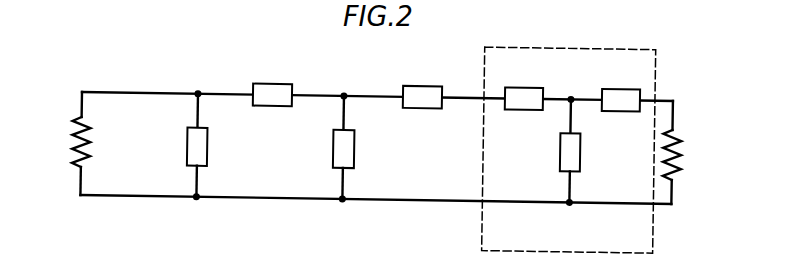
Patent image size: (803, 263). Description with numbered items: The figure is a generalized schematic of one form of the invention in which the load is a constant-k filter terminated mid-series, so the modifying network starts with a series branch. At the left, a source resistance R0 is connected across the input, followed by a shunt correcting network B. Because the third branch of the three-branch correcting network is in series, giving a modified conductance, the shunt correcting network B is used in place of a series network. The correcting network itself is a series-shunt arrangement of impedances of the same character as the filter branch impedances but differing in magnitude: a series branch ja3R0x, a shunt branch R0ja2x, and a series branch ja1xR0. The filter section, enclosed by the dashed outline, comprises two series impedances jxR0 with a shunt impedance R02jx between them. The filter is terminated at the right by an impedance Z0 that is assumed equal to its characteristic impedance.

The resistance R0 is at (56, 143).
The shunt correcting network B is at (179, 145).
The series branch impedance ja3R0x is at (282, 80).
The shunt branch impedance R0ja2x is at (400, 151).
The series branch impedance ja1xR0 is at (421, 82).
The filter series impedance jxR0 is at (568, 83).
The filter shunt impedance R02jx is at (620, 148).
The terminating impedance Z0 is at (691, 153).